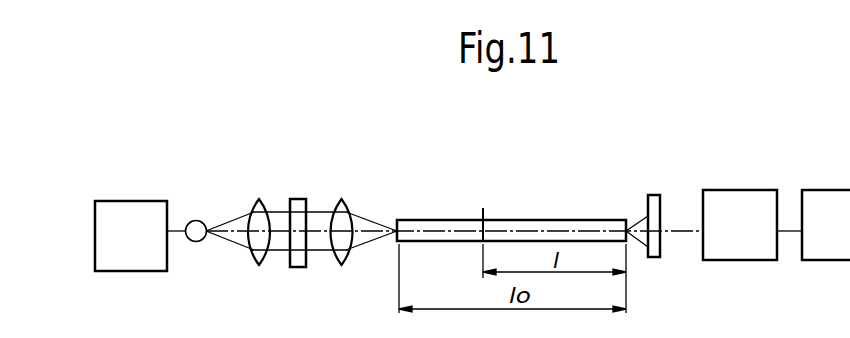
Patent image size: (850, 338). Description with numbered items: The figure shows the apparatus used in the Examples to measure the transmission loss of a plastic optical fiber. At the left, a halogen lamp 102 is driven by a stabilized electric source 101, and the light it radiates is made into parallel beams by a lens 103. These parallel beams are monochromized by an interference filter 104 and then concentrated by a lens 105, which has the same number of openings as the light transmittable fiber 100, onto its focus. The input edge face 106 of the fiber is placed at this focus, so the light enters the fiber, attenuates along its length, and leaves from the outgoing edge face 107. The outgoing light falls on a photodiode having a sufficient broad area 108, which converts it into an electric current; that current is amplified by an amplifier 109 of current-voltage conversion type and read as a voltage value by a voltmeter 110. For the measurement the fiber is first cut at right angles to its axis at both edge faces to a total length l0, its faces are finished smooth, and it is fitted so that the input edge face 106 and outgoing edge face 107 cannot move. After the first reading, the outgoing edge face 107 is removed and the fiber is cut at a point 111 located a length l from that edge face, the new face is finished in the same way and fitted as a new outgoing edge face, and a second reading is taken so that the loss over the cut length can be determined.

The light transmittable fiber 100 is at (540, 228).
The stabilized electric source 101 is at (131, 271).
The light source 102 is at (196, 220).
The lens 103 is at (259, 198).
The interference filter 104 is at (297, 198).
The lens 105 is at (342, 198).
The input edge face 106 is at (395, 235).
The outgoing edge face 107 is at (626, 220).
The photodiode having a sufficient broad area 108 is at (652, 194).
The amplifier of current-voltage conversion type 109 is at (735, 189).
The voltmeter 110 is at (828, 189).
The point 111 is at (483, 207).